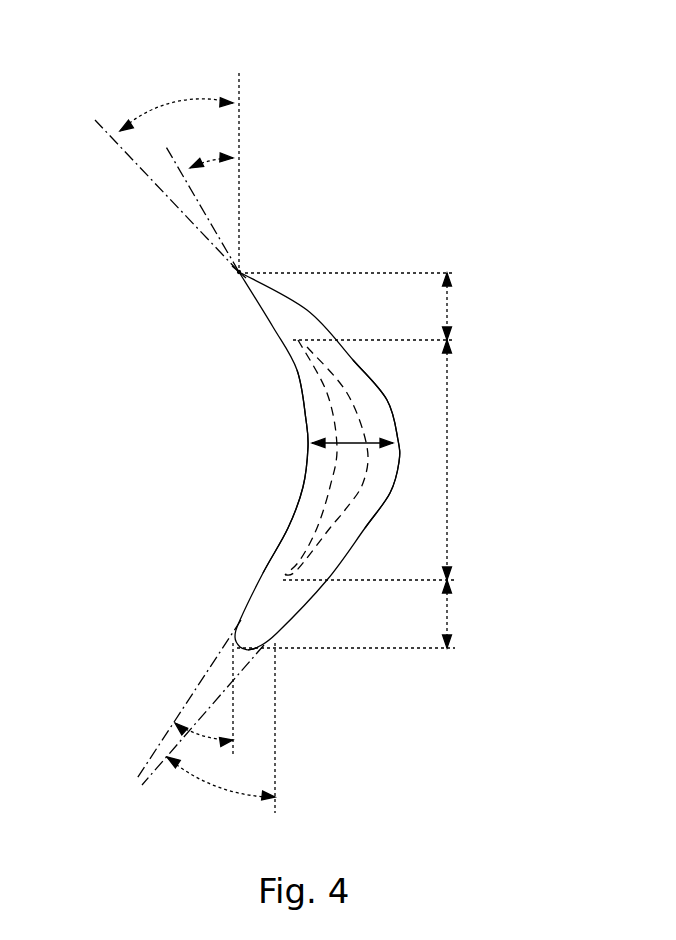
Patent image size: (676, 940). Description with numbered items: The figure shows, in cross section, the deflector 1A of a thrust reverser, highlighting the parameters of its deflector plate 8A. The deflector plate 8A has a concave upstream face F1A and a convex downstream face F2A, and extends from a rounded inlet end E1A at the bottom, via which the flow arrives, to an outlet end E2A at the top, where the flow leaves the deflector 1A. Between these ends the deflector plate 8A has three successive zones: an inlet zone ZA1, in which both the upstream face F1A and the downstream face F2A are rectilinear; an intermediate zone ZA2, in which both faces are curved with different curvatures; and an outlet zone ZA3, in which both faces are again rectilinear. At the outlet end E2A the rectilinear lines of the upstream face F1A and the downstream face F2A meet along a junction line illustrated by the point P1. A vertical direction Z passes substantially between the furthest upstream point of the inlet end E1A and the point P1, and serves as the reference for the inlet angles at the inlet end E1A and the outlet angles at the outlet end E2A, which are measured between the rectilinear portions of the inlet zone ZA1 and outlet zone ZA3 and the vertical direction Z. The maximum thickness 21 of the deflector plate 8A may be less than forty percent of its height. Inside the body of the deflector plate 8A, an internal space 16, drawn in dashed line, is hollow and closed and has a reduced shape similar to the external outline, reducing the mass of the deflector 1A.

The deflector 1A is at (307, 405).
The deflector plate 8A is at (292, 369).
The internal space 16 is at (343, 517).
The maximum thickness 21 is at (355, 438).
The point P1 is at (237, 275).
The inlet end E1A is at (280, 657).
The outlet end E2A is at (229, 269).
The upstream face F1A is at (300, 482).
The downstream face F2A is at (411, 413).
The vertical direction Z is at (241, 130).
The inlet zone ZA1 is at (447, 617).
The intermediate zone ZA2 is at (447, 457).
The outlet zone ZA3 is at (447, 308).